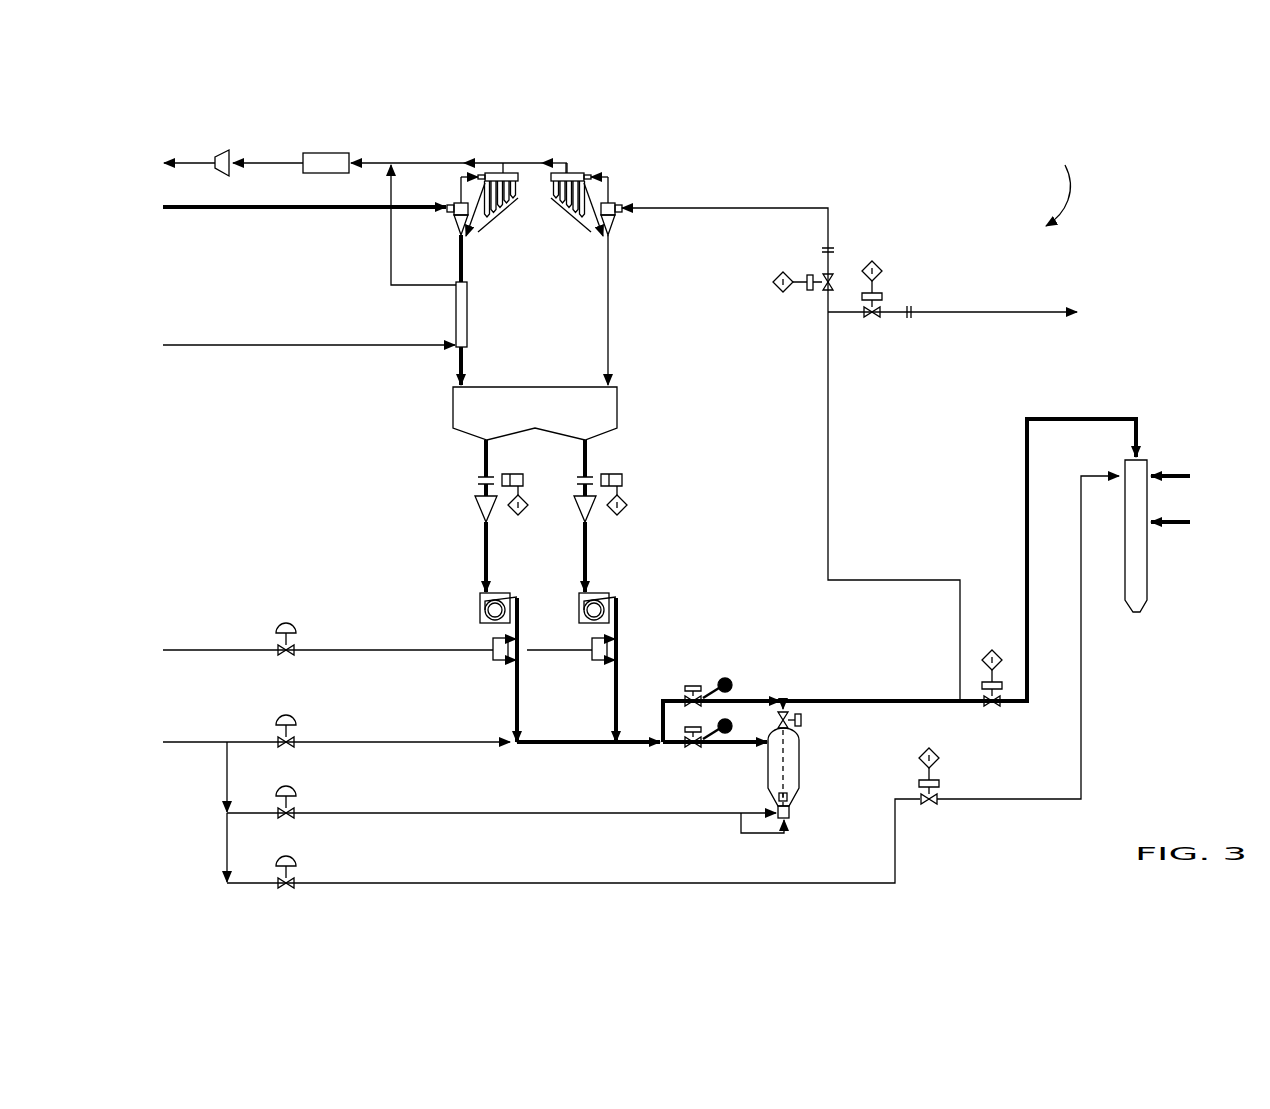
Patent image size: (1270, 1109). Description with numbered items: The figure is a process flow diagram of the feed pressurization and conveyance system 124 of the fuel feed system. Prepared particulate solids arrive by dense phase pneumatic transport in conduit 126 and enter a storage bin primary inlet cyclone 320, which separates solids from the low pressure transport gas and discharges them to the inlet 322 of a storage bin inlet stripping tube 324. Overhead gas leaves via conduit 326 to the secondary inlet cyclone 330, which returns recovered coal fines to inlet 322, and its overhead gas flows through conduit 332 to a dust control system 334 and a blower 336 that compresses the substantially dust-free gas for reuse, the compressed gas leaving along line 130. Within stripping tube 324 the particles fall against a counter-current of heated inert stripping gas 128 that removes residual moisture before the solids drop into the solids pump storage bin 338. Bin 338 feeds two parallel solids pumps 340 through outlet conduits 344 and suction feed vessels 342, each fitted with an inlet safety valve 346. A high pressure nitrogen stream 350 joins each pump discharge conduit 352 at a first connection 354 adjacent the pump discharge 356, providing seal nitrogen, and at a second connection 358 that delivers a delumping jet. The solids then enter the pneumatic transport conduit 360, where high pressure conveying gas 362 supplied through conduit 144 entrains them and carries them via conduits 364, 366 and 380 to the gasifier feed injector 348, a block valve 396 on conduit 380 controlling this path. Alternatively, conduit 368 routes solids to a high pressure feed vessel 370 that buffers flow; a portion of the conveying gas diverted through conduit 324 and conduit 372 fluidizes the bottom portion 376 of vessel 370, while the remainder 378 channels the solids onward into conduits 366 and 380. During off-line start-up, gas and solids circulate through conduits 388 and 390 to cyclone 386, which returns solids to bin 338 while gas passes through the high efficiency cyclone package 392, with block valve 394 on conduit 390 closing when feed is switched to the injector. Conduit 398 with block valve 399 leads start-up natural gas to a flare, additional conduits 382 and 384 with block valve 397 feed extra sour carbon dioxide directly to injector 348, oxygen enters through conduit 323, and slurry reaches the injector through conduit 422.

The feed pressurization and conveyance system 124 is at (1051, 185).
The conduit 126 is at (258, 208).
The stripping gas 128 is at (258, 346).
The outlet stream 130 is at (197, 162).
The conduit 144 is at (180, 739).
The storage bin primary inlet cyclone 320 is at (453, 223).
The inlet 322 is at (467, 284).
The conduit 323 is at (1168, 475).
The storage bin inlet stripping tube 324 is at (453, 318).
The conduit 326 is at (455, 197).
The storage bin secondary inlet cyclone 330 is at (497, 172).
The conduit 332 is at (433, 160).
The dust control system 334 is at (323, 155).
The blower 336 is at (235, 157).
The solids pump storage bin 338 is at (452, 410).
The solids pump 340 is at (500, 593).
The suction feed vessel 342 is at (475, 497).
The outlet conduit 344 is at (483, 450).
The inlet safety valve 346 is at (482, 473).
The feed injector 348 is at (1147, 543).
The high pressure stream of nitrogen 350 is at (250, 649).
The discharge conduit 352 is at (512, 680).
The first connection 354 is at (493, 640).
The discharge 356 is at (515, 597).
The second connection 358 is at (493, 660).
The pneumatic transport conduit 360 is at (578, 743).
The high pressure conveying gas 362 is at (490, 742).
The conduit 364 is at (677, 700).
The conduit 366 is at (813, 698).
The conduit 368 is at (677, 743).
The high pressure feed vessel 370 is at (800, 767).
The conduit 372 is at (758, 810).
The bottom portion 376 is at (790, 797).
The remainder of high pressure conveying gas 378 is at (762, 835).
The conduit 380 is at (1028, 605).
The additional conduit 382 is at (837, 882).
The additional conduit 384 is at (1082, 735).
The cyclone 386 is at (615, 203).
The conduit 388 is at (962, 610).
The conduit 390 is at (830, 207).
The high efficiency cyclone package 392 is at (573, 170).
The block valve 394 is at (788, 292).
The block valve 396 is at (997, 705).
The block valve 397 is at (933, 768).
The conduit 398 is at (953, 310).
The block valve 399 is at (880, 307).
The conduit 422 is at (1168, 520).